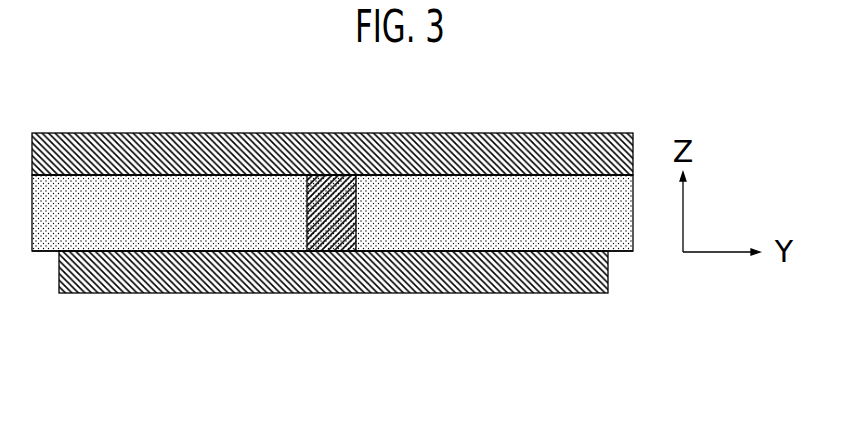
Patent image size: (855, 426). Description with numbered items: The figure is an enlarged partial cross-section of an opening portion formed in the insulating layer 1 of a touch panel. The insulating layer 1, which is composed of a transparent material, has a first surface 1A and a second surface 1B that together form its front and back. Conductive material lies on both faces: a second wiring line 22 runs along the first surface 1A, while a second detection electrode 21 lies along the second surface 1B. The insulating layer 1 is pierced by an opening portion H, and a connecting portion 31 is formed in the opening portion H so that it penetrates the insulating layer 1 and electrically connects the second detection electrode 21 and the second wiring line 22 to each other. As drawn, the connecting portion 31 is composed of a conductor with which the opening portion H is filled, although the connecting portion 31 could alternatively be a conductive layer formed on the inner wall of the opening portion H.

The insulating layer 1 is at (577, 200).
The first surface 1A is at (176, 175).
The second surface 1B is at (172, 251).
The second detection electrode 21 is at (472, 270).
The second wiring line 22 is at (83, 155).
The connecting portion 31 is at (332, 220).
The opening portion H is at (330, 176).